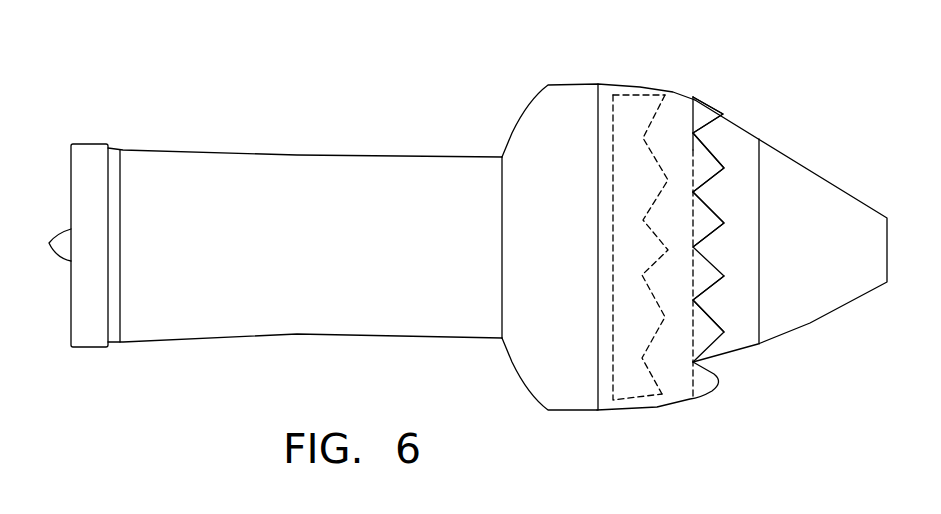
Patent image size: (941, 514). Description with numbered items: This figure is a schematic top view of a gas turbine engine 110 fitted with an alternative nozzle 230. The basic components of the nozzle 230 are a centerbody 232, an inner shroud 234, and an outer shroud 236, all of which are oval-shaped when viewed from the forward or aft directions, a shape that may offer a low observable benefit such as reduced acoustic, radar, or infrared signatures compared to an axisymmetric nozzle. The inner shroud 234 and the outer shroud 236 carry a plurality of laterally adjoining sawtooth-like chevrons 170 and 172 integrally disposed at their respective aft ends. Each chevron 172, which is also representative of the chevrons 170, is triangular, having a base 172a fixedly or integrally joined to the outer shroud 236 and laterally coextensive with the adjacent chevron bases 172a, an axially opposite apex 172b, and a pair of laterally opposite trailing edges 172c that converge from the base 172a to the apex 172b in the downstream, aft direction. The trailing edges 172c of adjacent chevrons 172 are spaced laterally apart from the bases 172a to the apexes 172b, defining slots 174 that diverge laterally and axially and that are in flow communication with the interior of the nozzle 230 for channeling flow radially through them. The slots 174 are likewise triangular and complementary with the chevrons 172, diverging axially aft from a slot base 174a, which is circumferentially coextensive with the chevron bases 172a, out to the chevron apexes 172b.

The engine 110 is at (365, 100).
The chevrons 170 is at (653, 393).
The chevrons 172 is at (711, 161).
The base 172a is at (697, 117).
The apex 172b is at (724, 168).
The trailing edges 172c is at (768, 222).
The slots 174 is at (722, 250).
The slot base 174a is at (697, 307).
The nozzle 230 is at (724, 86).
The centerbody 232 is at (822, 310).
The inner shroud 234 is at (632, 93).
The outer shroud 236 is at (668, 408).